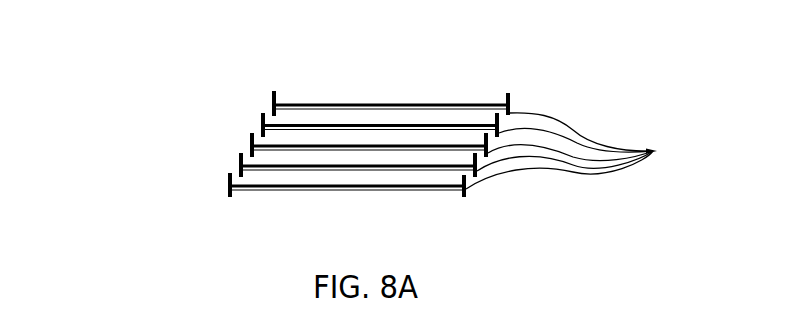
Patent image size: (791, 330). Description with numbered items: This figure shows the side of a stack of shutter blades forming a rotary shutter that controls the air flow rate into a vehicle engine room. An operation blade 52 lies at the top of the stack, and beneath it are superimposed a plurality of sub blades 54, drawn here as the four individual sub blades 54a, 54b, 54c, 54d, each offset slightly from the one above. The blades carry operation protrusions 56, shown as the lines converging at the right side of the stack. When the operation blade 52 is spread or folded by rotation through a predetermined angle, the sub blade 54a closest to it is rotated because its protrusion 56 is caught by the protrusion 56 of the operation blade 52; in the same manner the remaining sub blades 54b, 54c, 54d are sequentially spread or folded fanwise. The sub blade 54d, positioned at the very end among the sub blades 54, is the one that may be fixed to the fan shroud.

The operation blade 52 is at (365, 105).
The sub blades 54 is at (276, 144).
The sub blade 54a is at (256, 117).
The sub blade 54b is at (244, 136).
The sub blade 54c is at (234, 158).
The sub blade 54d is at (222, 184).
The operation protrusions 56 is at (576, 151).